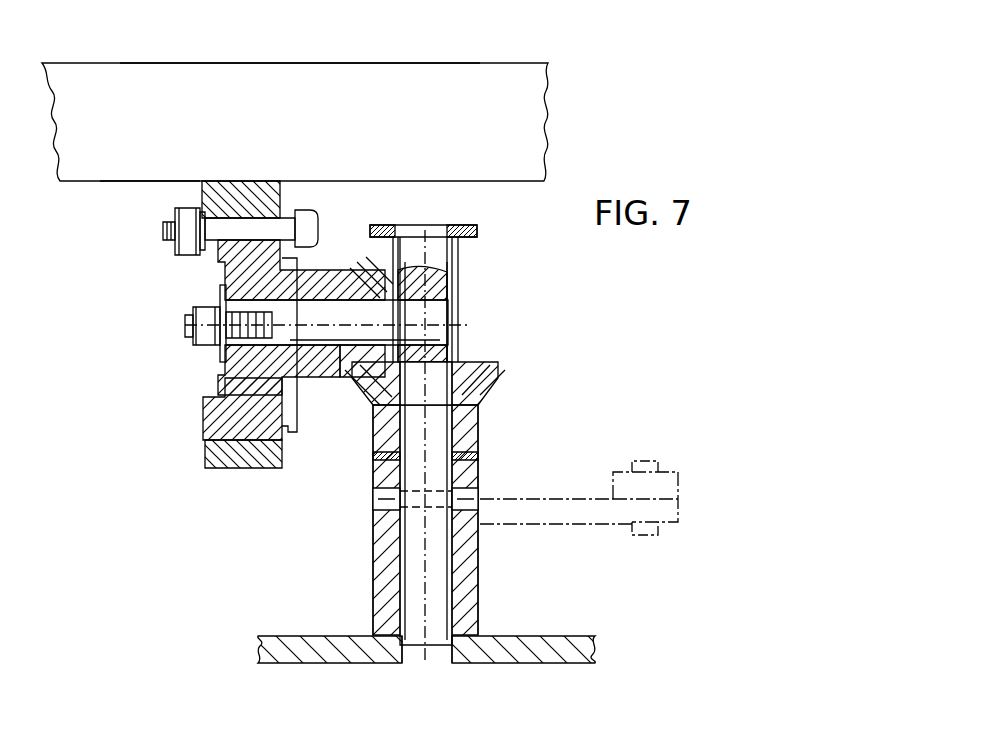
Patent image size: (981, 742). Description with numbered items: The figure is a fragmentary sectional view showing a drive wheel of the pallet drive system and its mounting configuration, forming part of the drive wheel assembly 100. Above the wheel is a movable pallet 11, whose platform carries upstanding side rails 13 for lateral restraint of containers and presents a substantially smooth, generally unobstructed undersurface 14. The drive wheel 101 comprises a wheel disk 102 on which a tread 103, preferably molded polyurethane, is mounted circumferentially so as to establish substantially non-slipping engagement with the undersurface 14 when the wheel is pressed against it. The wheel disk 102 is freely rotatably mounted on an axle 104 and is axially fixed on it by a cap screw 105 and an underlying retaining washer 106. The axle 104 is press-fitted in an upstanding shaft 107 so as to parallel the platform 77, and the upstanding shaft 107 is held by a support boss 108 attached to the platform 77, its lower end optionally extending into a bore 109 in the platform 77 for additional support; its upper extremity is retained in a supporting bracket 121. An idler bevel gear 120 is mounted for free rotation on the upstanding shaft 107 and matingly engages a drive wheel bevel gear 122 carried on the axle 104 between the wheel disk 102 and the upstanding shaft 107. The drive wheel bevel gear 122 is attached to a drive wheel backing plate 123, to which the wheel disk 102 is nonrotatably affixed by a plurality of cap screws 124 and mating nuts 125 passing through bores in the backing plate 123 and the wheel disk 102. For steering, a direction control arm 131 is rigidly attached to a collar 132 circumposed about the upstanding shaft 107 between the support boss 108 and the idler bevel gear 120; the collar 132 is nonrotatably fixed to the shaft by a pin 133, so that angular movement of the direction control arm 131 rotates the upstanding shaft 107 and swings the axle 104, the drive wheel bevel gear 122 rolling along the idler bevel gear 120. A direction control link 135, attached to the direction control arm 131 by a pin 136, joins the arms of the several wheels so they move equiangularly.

The movable pallet 11 is at (303, 61).
The upstanding side rail 13 is at (545, 94).
The undersurface 14 is at (130, 184).
The platform 77 is at (590, 646).
The drive wheel assembly 100 is at (154, 310).
The drive wheel 101 is at (258, 183).
The wheel disk 102 is at (212, 422).
The tread 103 is at (242, 469).
The axle 104 is at (335, 302).
The cap screw 105 is at (192, 330).
The retaining washer 106 is at (221, 298).
The upstanding shaft 107 is at (437, 439).
The support boss 108 is at (472, 572).
The bore 109 is at (447, 655).
The idler bevel gear 120 is at (493, 381).
The supporting bracket 121 is at (468, 229).
The drive wheel bevel gear 122 is at (347, 378).
The drive wheel backing plate 123 is at (296, 433).
The cap screw 124 is at (310, 222).
The nut 125 is at (180, 212).
The direction control arm 131 is at (588, 528).
The collar 132 is at (470, 484).
The pin 133 is at (383, 503).
The direction control link 135 is at (625, 471).
The pin 136 is at (655, 461).